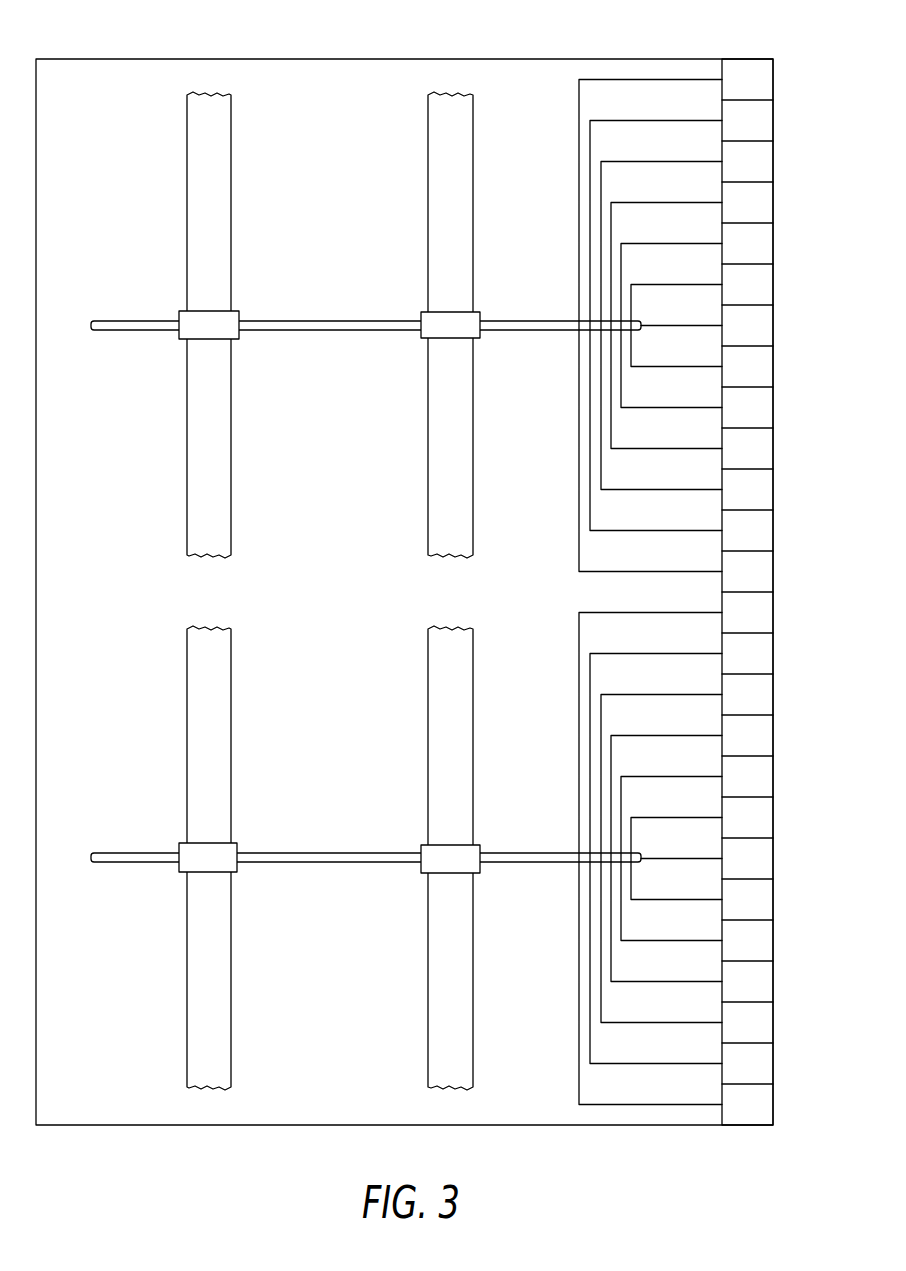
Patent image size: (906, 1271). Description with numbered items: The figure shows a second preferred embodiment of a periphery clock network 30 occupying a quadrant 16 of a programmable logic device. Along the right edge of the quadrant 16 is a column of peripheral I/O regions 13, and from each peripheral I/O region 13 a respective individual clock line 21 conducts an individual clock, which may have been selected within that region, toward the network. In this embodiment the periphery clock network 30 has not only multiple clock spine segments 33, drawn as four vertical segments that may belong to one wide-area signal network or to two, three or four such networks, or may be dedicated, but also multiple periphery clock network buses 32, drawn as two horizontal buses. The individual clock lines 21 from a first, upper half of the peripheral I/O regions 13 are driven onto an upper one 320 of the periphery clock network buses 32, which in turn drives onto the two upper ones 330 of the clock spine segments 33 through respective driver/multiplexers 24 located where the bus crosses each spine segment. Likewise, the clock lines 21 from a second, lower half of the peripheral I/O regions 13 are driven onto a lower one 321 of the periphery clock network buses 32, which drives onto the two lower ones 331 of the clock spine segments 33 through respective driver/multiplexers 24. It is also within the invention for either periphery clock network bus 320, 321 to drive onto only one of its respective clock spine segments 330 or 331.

The quadrant 16 is at (121, 58).
The peripheral I/O region 13 is at (773, 76).
The individual clock line 21 is at (714, 120).
The driver/multiplexer 24 is at (239, 316).
The periphery clock network 30 is at (148, 559).
The periphery clock network bus 32 is at (160, 332).
The upper periphery clock network bus 320 is at (117, 320).
The lower periphery clock network bus 321 is at (132, 864).
The clock spine segment 33 is at (231, 190).
The upper clock spine segment 330 is at (231, 148).
The lower clock spine segment 331 is at (232, 694).